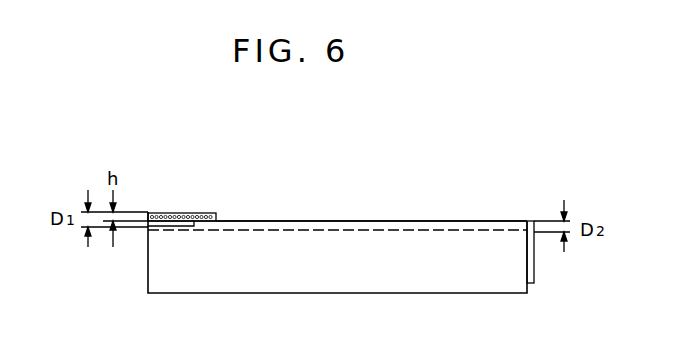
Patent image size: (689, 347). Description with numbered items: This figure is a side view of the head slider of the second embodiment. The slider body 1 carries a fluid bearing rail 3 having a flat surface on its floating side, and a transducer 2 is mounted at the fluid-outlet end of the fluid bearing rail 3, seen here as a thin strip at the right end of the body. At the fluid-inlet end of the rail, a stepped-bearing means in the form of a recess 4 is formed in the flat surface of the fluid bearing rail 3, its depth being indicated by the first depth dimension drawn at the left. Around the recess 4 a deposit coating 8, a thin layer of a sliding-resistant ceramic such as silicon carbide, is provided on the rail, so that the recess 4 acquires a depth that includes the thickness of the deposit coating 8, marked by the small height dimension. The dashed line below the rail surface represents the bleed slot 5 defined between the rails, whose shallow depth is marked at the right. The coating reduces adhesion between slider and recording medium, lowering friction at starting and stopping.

The slider body 1 is at (421, 281).
The transducer 2 is at (534, 268).
The fluid bearing rail 3 is at (384, 220).
The recess 4 is at (161, 220).
The bleed slot 5 is at (452, 228).
The deposit coating 8 is at (183, 213).